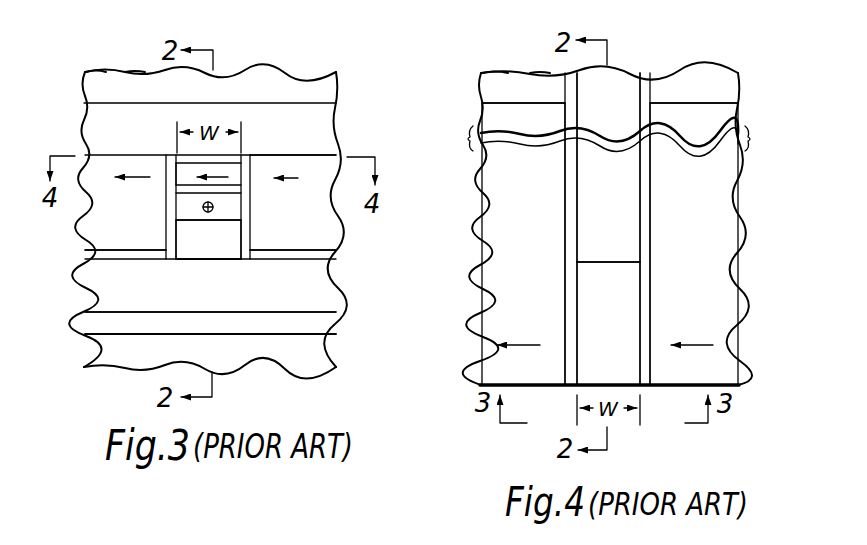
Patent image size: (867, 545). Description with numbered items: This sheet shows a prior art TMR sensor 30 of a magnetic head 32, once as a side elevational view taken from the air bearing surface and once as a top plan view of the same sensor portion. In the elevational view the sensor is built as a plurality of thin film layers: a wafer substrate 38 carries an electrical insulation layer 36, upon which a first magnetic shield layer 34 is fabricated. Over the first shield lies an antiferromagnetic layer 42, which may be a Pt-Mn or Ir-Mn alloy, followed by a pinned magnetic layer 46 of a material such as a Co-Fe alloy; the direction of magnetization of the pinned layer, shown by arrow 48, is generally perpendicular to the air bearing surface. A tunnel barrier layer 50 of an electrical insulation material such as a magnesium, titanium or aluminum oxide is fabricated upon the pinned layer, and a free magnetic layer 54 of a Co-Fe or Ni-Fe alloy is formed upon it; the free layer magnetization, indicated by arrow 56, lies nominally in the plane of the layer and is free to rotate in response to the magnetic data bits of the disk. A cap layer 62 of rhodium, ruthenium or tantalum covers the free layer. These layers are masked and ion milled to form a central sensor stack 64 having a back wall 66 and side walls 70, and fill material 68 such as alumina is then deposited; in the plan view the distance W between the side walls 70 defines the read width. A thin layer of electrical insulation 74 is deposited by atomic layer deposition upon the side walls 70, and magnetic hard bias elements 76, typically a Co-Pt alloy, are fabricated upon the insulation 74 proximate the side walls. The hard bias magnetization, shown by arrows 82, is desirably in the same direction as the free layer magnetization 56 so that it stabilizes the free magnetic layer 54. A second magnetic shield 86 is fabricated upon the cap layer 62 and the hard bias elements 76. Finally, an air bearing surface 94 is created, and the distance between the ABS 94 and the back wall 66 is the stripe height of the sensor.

In FIG. 3, the TMR sensor 30 is at (90, 67).
In FIG. 4, the TMR sensor 30 is at (498, 69).
In FIG. 3, the magnetic head 32 is at (130, 67).
In FIG. 4, the magnetic head 32 is at (540, 69).
In FIG. 3, the first magnetic shield layer 34 is at (281, 298).
In FIG. 3, the electrical insulation layer 36 is at (325, 322).
In FIG. 3, the wafer substrate 38 is at (281, 359).
In FIG. 3, the antiferromagnetic layer 42 is at (223, 247).
In FIG. 3, the pinned magnetic layer 46 is at (236, 207).
In FIG. 3, the arrow indicating direction of magnetization of the pinned magnetic layer 48 is at (203, 208).
In FIG. 3, the tunnel barrier layer 50 is at (226, 189).
In FIG. 3, the free magnetic layer 54 is at (177, 178).
In FIG. 3, the arrow indicating direction of magnetization of the free magnetic layer 56 is at (227, 174).
In FIG. 3, the cap layer 62 is at (187, 163).
In FIG. 4, the cap layer 62 is at (626, 303).
In FIG. 3, the central sensor stack 64 is at (213, 263).
In FIG. 4, the back wall 66 is at (593, 262).
In FIG. 4, the fill material 68 is at (623, 195).
In FIG. 3, the side walls 70 is at (175, 236).
In FIG. 4, the side walls 70 is at (565, 331).
In FIG. 3, the electrical insulation layer 74 is at (121, 252).
In FIG. 4, the electrical insulation layer 74 is at (566, 291).
In FIG. 3, the magnetic hard bias elements 76 is at (92, 223).
In FIG. 4, the magnetic hard bias elements 76 is at (538, 195).
In FIG. 3, the arrows indicating direction of magnetization of the hard bias elements 82 is at (125, 172).
In FIG. 4, the arrows indicating direction of magnetization of the hard bias elements 82 is at (523, 345).
In FIG. 3, the second magnetic shield 86 is at (317, 137).
In FIG. 4, the air bearing surface 94 is at (523, 390).